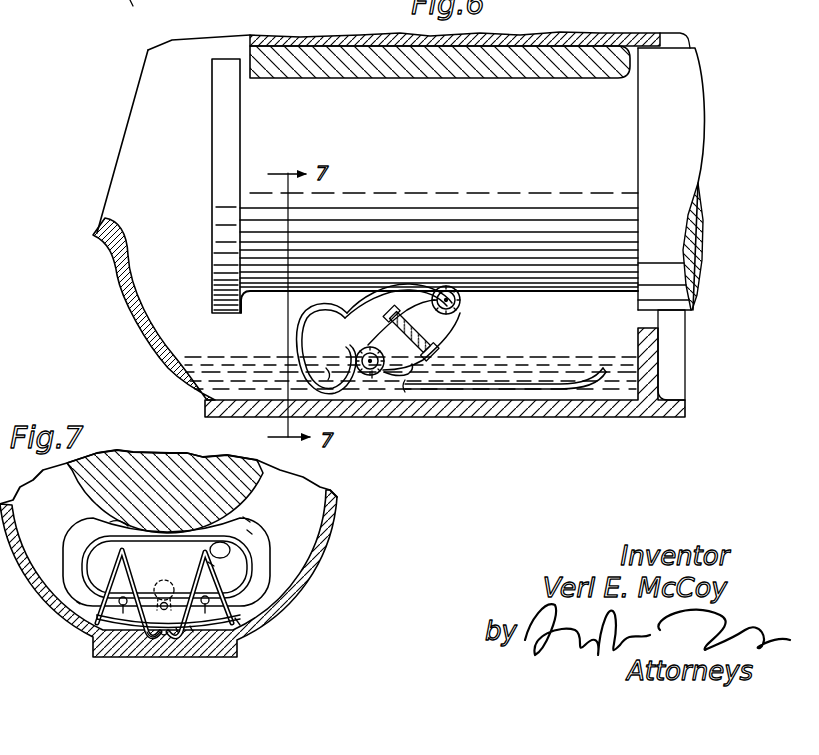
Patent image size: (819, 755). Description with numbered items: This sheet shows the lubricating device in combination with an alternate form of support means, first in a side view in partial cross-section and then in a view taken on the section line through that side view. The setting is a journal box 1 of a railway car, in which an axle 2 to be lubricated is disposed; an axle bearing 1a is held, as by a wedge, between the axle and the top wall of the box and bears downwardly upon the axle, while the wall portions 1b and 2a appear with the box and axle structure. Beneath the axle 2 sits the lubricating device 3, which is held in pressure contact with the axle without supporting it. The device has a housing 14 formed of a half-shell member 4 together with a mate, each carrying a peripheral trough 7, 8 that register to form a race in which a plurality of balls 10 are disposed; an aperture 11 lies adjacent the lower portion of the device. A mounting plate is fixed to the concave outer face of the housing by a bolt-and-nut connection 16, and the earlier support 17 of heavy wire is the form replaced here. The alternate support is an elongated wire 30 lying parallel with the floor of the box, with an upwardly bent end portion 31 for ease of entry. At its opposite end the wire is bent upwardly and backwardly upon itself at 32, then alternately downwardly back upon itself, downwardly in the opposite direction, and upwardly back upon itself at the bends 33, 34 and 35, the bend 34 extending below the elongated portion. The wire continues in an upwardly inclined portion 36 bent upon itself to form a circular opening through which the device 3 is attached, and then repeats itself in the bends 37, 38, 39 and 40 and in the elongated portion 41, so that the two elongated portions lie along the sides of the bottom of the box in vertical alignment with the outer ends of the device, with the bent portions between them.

In FIG. 6, the journal box 1 is at (543, 414).
In FIG. 7, the journal box 1 is at (328, 537).
In FIG. 6, the axle bearing 1a is at (550, 60).
In FIG. 6, the curved frame wall 1b is at (123, 300).
In FIG. 6, the axle 2 is at (577, 265).
In FIG. 7, the axle 2 is at (153, 466).
In FIG. 6, the stator end flange 2a is at (212, 138).
In FIG. 6, the lubricating device 3 is at (466, 315).
In FIG. 7, the lubricating device 3 is at (250, 514).
In FIG. 7, the half-shell member 4 is at (225, 553).
In FIG. 7, the peripheral trough 7 is at (70, 560).
In FIG. 7, the peripheral trough 8 is at (77, 602).
In FIG. 6, the balls 10 is at (363, 375).
In FIG. 7, the balls 10 is at (125, 528).
In FIG. 6, the aperture 11 is at (373, 380).
In FIG. 7, the aperture 11 is at (123, 608).
In FIG. 6, the housing 14 is at (463, 302).
In FIG. 7, the housing 14 is at (250, 530).
In FIG. 6, the bolt-and-nut connection 16 is at (438, 357).
In FIG. 6, the support 17 is at (137, 14).
In FIG. 6, the elongated wire 30 is at (472, 392).
In FIG. 7, the elongated wire 30 is at (100, 630).
In FIG. 6, the upwardly bent end portion 31 is at (600, 365).
In FIG. 7, the upwardly bent end portion 31 is at (97, 614).
In FIG. 6, the bend 32 is at (298, 346).
In FIG. 7, the bend 32 is at (108, 582).
In FIG. 6, the bend 33 is at (341, 318).
In FIG. 7, the bend 33 is at (127, 553).
In FIG. 6, the bend 34 is at (326, 368).
In FIG. 7, the bend 34 is at (157, 637).
In FIG. 6, the bend 35 is at (413, 382).
In FIG. 7, the bend 35 is at (165, 638).
In FIG. 6, the upwardly inclined portion 36 is at (436, 342).
In FIG. 7, the upwardly inclined portion 36 is at (166, 586).
In FIG. 7, the bend 37 is at (176, 631).
In FIG. 7, the bend 38 is at (192, 627).
In FIG. 7, the bend 39 is at (203, 553).
In FIG. 7, the bend 40 is at (212, 564).
In FIG. 7, the elongated portion 41 is at (238, 622).